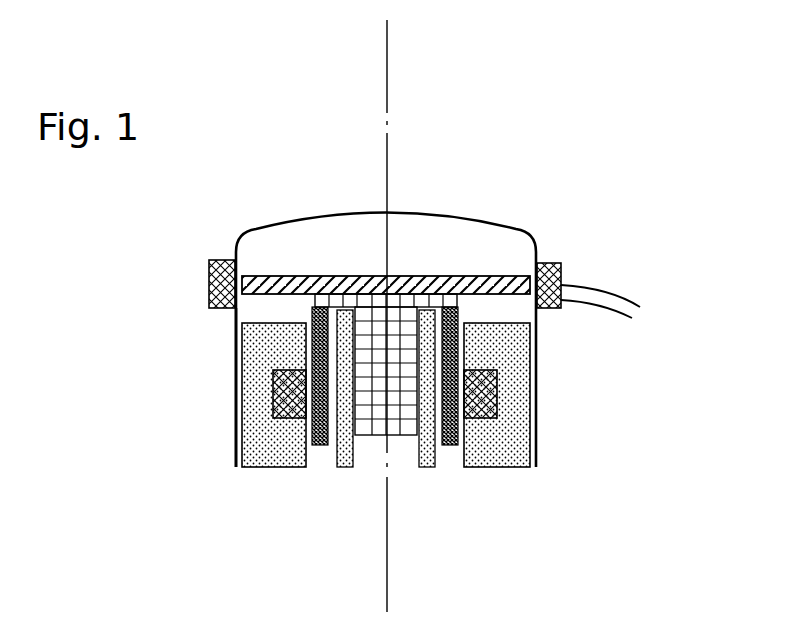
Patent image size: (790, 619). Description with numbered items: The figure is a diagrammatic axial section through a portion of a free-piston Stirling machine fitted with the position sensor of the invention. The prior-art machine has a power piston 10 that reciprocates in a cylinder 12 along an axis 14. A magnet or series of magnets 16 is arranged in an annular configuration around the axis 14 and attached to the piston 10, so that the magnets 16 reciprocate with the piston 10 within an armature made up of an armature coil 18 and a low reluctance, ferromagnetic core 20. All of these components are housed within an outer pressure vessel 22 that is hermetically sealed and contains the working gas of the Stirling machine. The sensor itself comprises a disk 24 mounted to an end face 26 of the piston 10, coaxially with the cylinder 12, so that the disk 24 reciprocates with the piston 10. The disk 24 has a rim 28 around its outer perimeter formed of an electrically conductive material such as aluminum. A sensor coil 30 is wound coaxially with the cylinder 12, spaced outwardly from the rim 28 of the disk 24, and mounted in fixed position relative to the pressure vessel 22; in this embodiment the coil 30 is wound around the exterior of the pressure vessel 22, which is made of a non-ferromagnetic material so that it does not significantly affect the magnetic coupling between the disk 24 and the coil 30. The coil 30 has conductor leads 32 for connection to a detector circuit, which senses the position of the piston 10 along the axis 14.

The power piston 10 is at (375, 435).
The cylinder 12 is at (417, 460).
The axis 14 is at (387, 75).
The magnets 16 is at (322, 445).
The armature coil 18 is at (485, 402).
The ferromagnetic core 20 is at (515, 443).
The outer pressure vessel 22 is at (507, 225).
The disk 24 is at (302, 282).
The end face 26 is at (347, 300).
The rim 28 is at (237, 300).
The sensor coil 30 is at (210, 282).
The conductor leads 32 is at (640, 307).